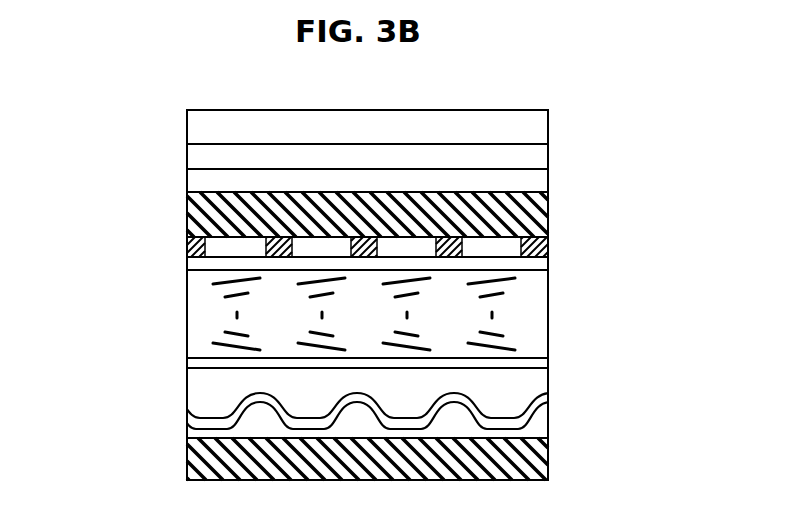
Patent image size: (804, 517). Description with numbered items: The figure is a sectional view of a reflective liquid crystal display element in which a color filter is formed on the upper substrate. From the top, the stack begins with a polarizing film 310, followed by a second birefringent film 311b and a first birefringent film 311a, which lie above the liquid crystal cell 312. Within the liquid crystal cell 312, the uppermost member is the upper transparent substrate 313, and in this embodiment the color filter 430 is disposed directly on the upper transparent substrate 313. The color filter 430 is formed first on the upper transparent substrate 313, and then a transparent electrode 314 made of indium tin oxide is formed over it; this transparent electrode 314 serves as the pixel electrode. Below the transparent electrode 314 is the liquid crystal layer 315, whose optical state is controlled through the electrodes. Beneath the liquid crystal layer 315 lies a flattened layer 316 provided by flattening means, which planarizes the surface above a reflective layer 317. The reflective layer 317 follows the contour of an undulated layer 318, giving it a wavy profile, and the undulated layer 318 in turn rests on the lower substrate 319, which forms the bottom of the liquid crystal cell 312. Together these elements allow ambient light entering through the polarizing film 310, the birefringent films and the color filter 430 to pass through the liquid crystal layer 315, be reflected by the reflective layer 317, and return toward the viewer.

The polarizing film 310 is at (523, 128).
The second birefringent film 311b is at (532, 160).
The first birefringent film 311a is at (532, 182).
The liquid crystal cell 312 is at (165, 202).
The upper transparent substrate 313 is at (525, 210).
The color filter 430 is at (542, 247).
The transparent electrode 314 is at (540, 264).
The liquid crystal layer 315 is at (528, 303).
The flattened layer 316 is at (530, 382).
The reflective layer 317 is at (540, 400).
The undulated layer 318 is at (538, 421).
The lower substrate 319 is at (548, 467).